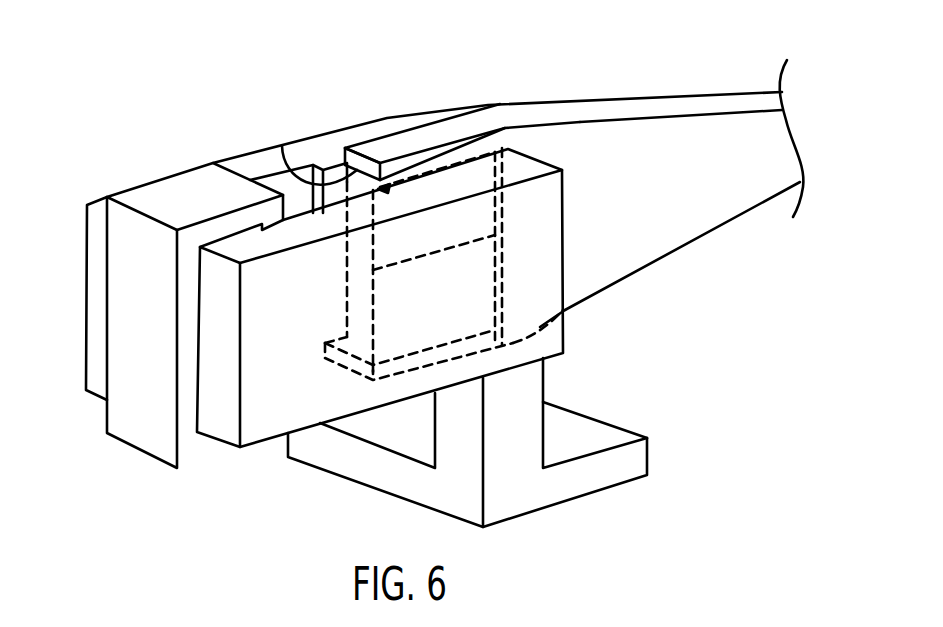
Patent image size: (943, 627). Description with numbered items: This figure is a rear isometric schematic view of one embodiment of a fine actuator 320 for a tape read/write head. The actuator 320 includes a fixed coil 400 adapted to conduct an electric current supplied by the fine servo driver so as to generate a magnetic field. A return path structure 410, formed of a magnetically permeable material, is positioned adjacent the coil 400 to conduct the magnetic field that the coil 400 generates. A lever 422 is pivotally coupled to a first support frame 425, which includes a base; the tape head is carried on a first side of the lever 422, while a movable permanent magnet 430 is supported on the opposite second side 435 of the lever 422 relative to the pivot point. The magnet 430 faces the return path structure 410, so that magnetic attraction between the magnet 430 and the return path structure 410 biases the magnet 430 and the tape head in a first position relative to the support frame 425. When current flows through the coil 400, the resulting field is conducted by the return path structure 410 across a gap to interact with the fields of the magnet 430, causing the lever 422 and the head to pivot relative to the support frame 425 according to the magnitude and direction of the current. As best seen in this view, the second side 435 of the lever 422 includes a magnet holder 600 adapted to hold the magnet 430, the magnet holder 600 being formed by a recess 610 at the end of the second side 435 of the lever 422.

The fine actuator 320 is at (202, 99).
The fixed coil 400 is at (162, 192).
The return path structure 410 is at (268, 443).
The lever 422 is at (613, 99).
The first support frame 425 is at (528, 386).
The permanent magnet 430 is at (358, 283).
The second side 435 is at (492, 120).
The magnet holder 600 is at (395, 145).
The recess 610 is at (282, 146).